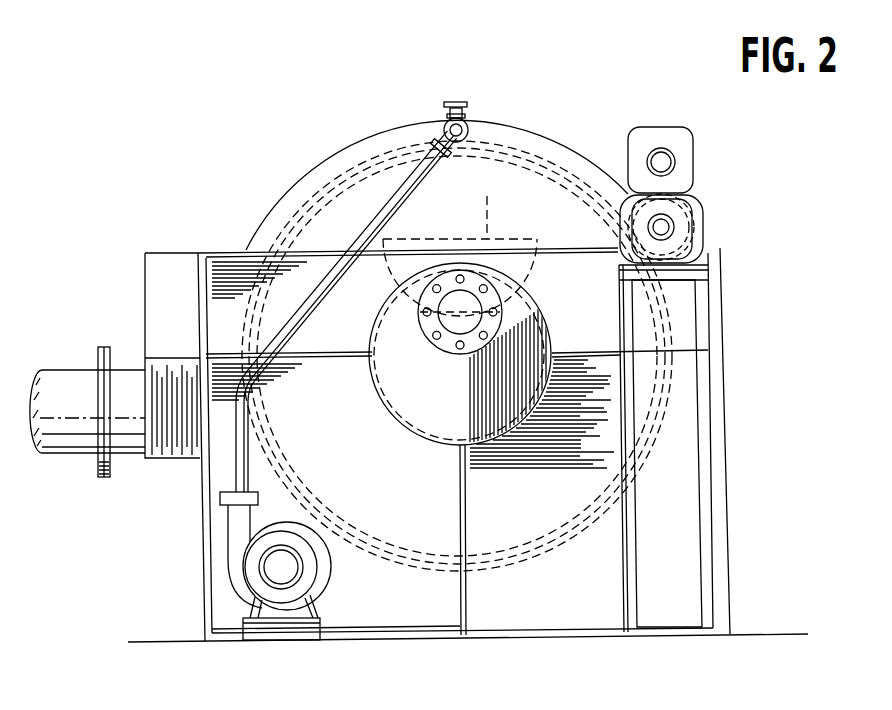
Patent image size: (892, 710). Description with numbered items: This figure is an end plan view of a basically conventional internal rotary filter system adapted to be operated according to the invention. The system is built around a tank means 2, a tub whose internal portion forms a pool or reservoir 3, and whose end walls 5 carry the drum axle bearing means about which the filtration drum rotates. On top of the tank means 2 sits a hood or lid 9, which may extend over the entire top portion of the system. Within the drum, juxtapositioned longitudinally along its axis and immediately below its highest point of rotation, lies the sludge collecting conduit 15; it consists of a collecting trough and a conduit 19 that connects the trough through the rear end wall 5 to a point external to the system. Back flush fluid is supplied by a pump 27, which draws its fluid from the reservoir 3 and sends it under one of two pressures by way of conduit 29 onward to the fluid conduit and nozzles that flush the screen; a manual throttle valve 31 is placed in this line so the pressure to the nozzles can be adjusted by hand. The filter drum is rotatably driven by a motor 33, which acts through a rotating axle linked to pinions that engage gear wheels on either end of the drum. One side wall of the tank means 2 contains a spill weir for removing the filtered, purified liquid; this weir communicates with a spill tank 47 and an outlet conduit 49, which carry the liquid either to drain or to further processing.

The tank means 2 is at (200, 545).
The reservoir 3 is at (580, 612).
The end walls 5 is at (362, 602).
The hood 9 is at (258, 228).
The sludge collecting conduit 15 is at (487, 232).
The conduit 19 is at (452, 322).
The pump 27 is at (315, 520).
The conduit 29 is at (320, 285).
The manual throttle valve 31 is at (459, 104).
The motor 33 is at (705, 196).
The spill tank 47 is at (145, 330).
The outlet conduit 49 is at (75, 443).